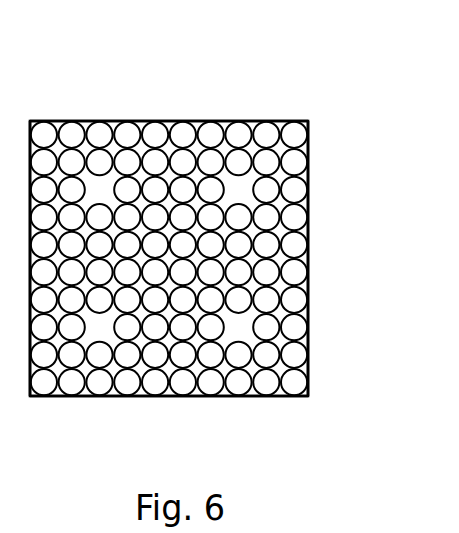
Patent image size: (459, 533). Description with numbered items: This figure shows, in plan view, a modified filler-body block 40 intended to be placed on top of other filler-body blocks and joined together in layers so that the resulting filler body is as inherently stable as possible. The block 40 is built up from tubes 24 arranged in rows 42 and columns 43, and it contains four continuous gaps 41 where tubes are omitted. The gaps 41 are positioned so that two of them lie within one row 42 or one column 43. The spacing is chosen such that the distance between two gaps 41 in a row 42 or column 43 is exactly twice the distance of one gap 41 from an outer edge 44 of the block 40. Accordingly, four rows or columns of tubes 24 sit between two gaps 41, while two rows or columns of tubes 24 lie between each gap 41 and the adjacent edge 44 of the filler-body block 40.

The filler-body block 40 is at (159, 104).
The continuous gap 41 is at (78, 176).
The row 42 is at (322, 193).
The column 43 is at (100, 106).
The outer edge 44 is at (309, 369).
The tube 24 is at (236, 220).